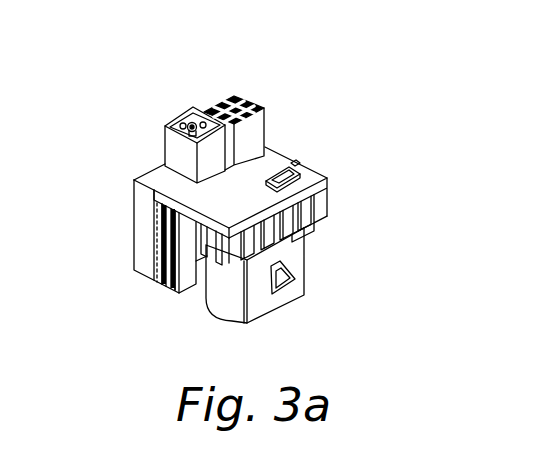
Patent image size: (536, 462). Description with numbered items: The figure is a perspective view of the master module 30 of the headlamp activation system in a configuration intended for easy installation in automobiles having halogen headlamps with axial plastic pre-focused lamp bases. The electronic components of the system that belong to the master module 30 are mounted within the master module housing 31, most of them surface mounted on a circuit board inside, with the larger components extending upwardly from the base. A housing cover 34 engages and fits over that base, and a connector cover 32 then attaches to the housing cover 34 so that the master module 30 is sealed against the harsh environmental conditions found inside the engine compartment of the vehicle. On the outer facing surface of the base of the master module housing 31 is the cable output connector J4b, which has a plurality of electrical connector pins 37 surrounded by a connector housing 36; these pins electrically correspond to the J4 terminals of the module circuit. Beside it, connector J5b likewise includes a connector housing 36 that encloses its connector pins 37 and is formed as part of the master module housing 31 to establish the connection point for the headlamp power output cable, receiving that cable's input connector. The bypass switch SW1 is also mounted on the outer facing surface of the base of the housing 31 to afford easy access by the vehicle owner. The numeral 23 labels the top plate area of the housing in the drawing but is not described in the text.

The master module 30 is at (322, 144).
The top plate of housing 23 is at (238, 211).
The master module housing 31 is at (138, 237).
The connector cover 32 is at (287, 258).
The housing cover 34 is at (153, 287).
The connector housing 36 is at (215, 174).
The electrical connector pins 37 is at (183, 127).
The cable output connector J4b is at (159, 109).
The connector J5b is at (256, 153).
The bypass switch SW1 is at (296, 164).